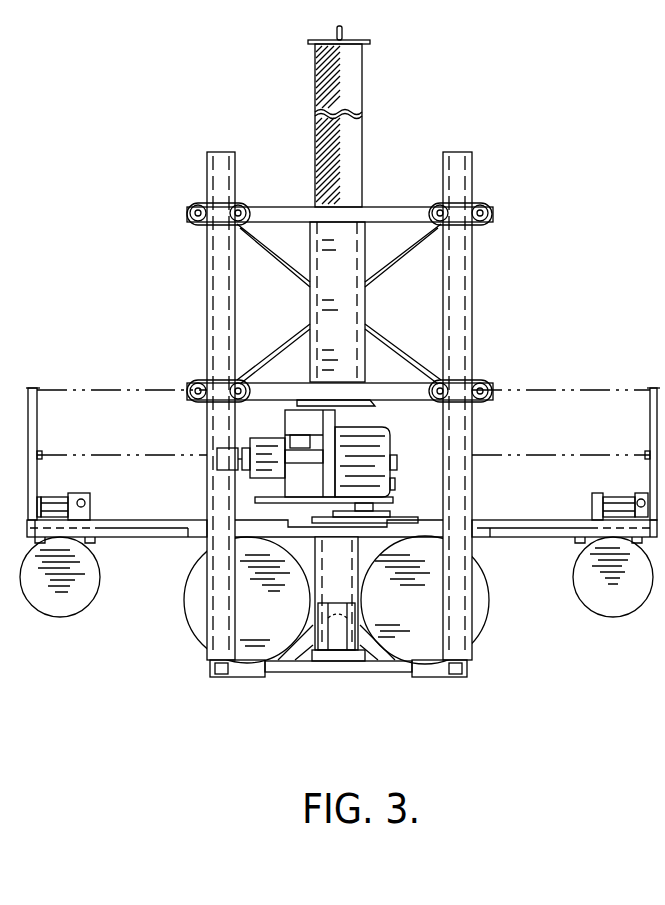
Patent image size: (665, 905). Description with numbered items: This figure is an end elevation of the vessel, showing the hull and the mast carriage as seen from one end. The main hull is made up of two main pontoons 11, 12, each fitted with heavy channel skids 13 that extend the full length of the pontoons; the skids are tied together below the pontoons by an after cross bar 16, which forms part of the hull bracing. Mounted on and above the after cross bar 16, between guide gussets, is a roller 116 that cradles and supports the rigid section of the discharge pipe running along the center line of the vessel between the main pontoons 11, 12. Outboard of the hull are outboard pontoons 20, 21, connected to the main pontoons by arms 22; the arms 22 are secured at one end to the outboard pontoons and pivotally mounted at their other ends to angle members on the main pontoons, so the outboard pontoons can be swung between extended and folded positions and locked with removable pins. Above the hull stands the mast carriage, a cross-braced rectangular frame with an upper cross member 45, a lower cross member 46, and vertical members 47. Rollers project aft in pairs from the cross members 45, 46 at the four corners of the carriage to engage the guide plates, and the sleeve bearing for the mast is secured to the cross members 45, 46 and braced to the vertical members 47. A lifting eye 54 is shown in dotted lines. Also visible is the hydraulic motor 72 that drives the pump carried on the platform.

The lifting eye 54 is at (357, 178).
The upper cross member 45 is at (378, 217).
The lower cross member 46 is at (400, 374).
The vertical members 47 is at (218, 300).
The hydraulic motor 72 is at (272, 440).
The arms 22 is at (132, 528).
The outboard pontoon 20 is at (50, 613).
The outboard pontoon 21 is at (612, 608).
The main pontoon 12 is at (198, 625).
The main pontoon 11 is at (480, 618).
The channel skids 13 is at (265, 677).
The after cross bar 16 is at (313, 668).
The roller 116 is at (355, 657).